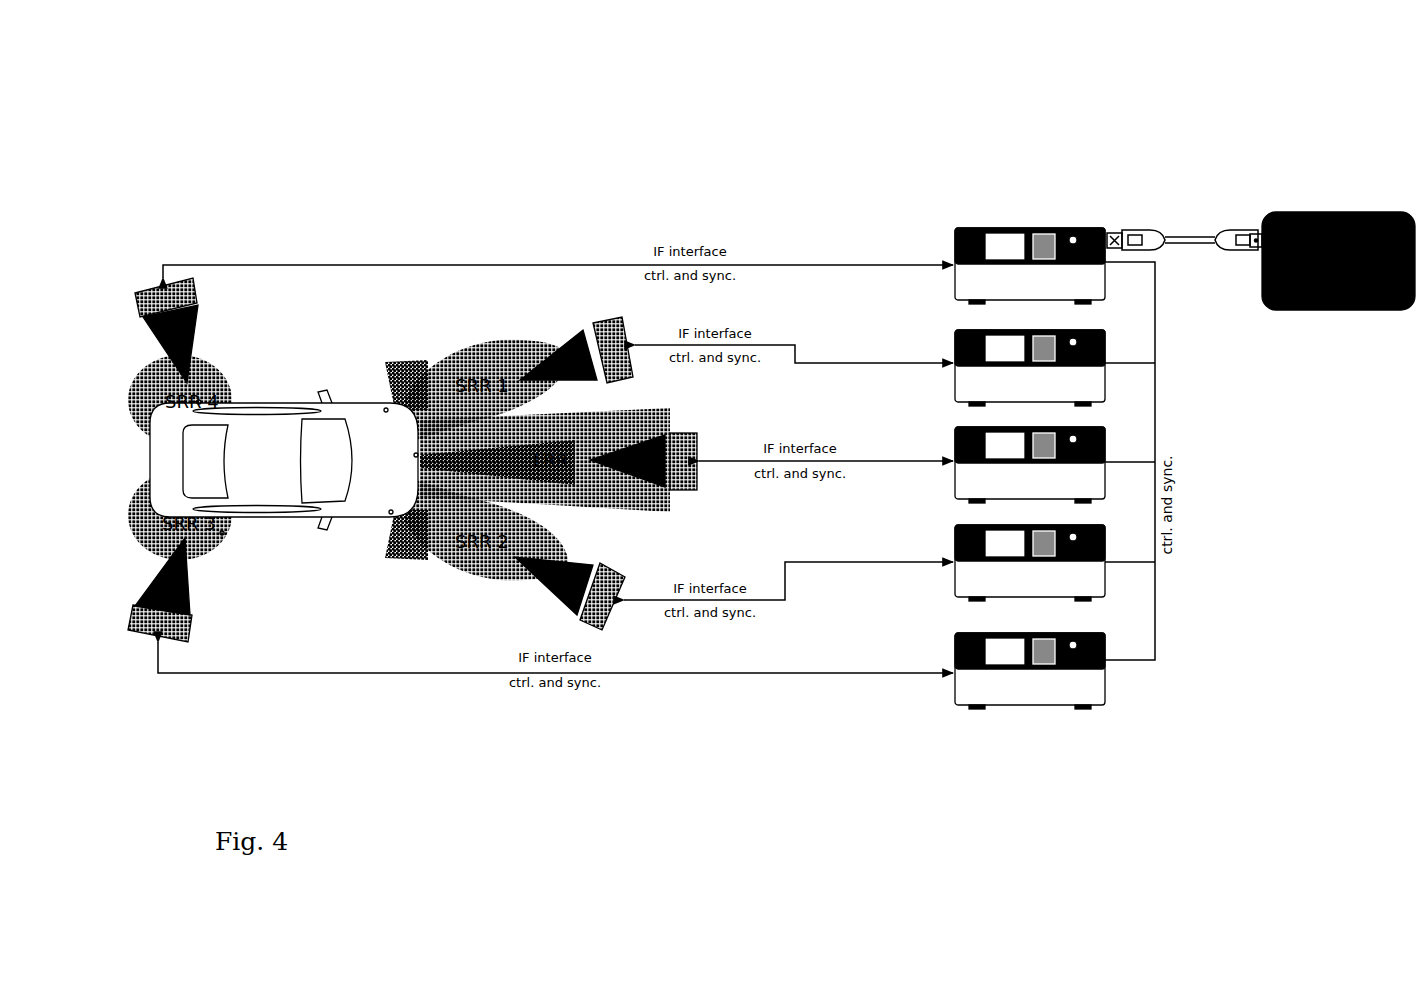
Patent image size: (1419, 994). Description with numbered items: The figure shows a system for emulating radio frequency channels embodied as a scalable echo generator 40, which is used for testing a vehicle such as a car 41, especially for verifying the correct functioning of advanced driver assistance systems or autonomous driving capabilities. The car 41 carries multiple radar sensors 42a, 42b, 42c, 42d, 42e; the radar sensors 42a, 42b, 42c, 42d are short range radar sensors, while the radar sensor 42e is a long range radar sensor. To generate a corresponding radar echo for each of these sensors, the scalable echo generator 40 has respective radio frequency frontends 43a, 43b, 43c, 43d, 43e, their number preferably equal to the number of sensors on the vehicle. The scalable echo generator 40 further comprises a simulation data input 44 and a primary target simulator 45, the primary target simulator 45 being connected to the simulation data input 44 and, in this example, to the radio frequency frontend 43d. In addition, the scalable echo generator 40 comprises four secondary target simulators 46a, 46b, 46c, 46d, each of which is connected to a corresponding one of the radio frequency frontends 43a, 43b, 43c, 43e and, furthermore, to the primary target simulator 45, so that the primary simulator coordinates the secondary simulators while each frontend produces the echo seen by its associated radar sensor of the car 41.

The scalable echo generator 40 is at (288, 93).
The car 41 is at (275, 455).
The radar sensor 42a is at (386, 413).
The radar sensor 42b is at (391, 510).
The radar sensor 42c is at (222, 535).
The radar sensor 42d is at (198, 403).
The radar sensor 42e is at (416, 458).
The radio frequency frontend 43a is at (597, 317).
The radio frequency frontend 43b is at (602, 630).
The radio frequency frontend 43c is at (172, 640).
The radio frequency frontend 43d is at (182, 280).
The radio frequency frontend 43e is at (697, 488).
The simulation data input 44 is at (1294, 220).
The primary target simulator 45 is at (955, 242).
The secondary target simulator 46a is at (955, 340).
The secondary target simulator 46b is at (955, 440).
The secondary target simulator 46c is at (955, 535).
The secondary target simulator 46d is at (955, 640).